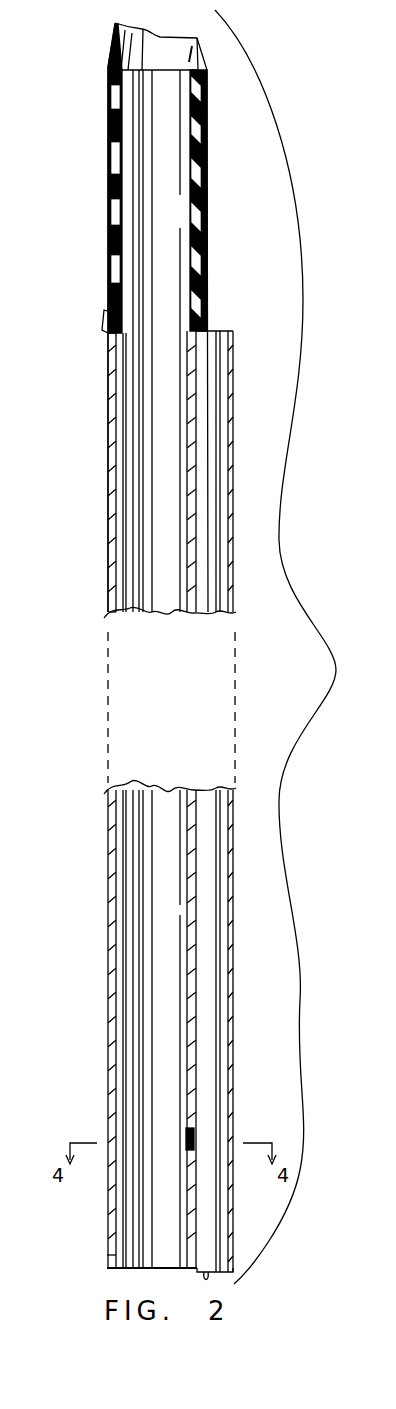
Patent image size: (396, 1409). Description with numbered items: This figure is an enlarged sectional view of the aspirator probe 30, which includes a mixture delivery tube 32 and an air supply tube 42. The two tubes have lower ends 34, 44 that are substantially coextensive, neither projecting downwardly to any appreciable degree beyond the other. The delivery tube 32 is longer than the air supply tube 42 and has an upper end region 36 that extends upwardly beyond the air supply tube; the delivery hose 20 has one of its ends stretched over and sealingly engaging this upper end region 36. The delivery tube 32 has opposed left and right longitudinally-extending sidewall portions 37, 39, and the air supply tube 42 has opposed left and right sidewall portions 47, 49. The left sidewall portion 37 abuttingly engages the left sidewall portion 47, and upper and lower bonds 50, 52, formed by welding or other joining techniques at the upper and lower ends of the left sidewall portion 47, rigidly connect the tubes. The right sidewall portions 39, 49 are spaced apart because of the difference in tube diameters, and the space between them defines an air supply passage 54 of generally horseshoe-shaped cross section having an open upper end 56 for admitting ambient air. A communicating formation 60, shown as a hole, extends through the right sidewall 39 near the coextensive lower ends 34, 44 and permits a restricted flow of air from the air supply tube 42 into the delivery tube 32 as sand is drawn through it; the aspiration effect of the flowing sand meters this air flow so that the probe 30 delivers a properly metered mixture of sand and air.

The delivery hose 20 is at (108, 155).
The aspirator probe 30 is at (92, 576).
The mixture delivery tube 32 is at (144, 496).
The lower end of delivery tube 34 is at (133, 1272).
The upper end region 36 is at (174, 148).
The left sidewall portion 37 is at (120, 626).
The right sidewall portion 39 is at (172, 628).
The air supply tube 42 is at (234, 428).
The lower end of air supply tube 44 is at (224, 1256).
The left sidewall portion 47 is at (108, 624).
The right sidewall portion 49 is at (234, 622).
The upper bond 50 is at (110, 337).
The lower bond 52 is at (110, 1262).
The air supply passage 54 is at (204, 504).
The open upper end 56 is at (204, 340).
The communicating formation 60 is at (196, 1142).